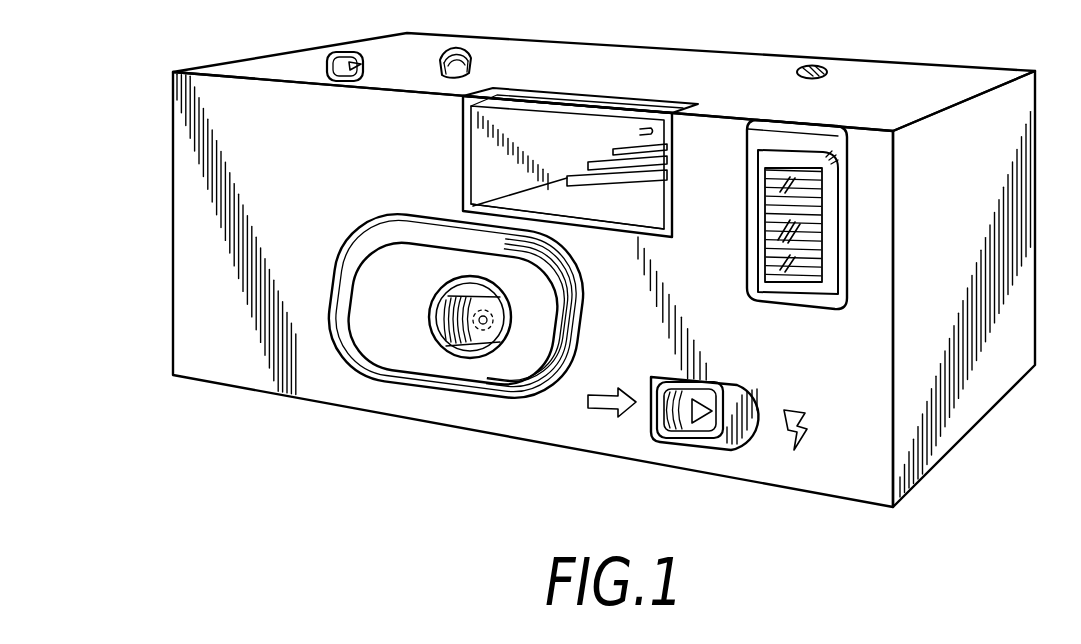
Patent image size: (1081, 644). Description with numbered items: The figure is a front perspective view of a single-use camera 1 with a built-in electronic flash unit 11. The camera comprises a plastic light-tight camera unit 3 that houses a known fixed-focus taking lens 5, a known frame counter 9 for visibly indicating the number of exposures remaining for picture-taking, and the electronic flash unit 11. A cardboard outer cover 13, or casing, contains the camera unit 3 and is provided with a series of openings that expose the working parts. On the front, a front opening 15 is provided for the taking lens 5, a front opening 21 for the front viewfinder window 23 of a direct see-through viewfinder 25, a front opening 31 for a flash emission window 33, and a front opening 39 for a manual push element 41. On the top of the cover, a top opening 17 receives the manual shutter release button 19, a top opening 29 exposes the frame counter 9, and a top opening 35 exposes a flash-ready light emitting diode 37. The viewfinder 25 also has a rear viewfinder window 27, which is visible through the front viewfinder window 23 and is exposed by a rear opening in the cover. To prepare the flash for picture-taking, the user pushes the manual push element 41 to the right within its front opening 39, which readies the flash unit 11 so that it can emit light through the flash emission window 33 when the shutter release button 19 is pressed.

The single-use camera 1 is at (128, 231).
The camera unit 3 is at (575, 340).
The taking lens 5 is at (465, 310).
The frame counter 9 is at (455, 60).
The electronic flash unit 11 is at (860, 245).
The outer cover 13 is at (963, 417).
The front opening 15 is at (352, 245).
The top opening 17 is at (363, 65).
The shutter release button 19 is at (343, 62).
The front opening 21 is at (485, 190).
The front viewfinder window 23 is at (483, 148).
The viewfinder 25 is at (550, 130).
The rear viewfinder window 27 is at (648, 133).
The top opening 29 is at (458, 60).
The front opening 31 is at (772, 222).
The flash emission window 33 is at (783, 200).
The top opening 35 is at (812, 68).
The flash-ready light emitting diode 37 is at (808, 68).
The front opening 39 is at (747, 432).
The manual push element 41 is at (663, 407).